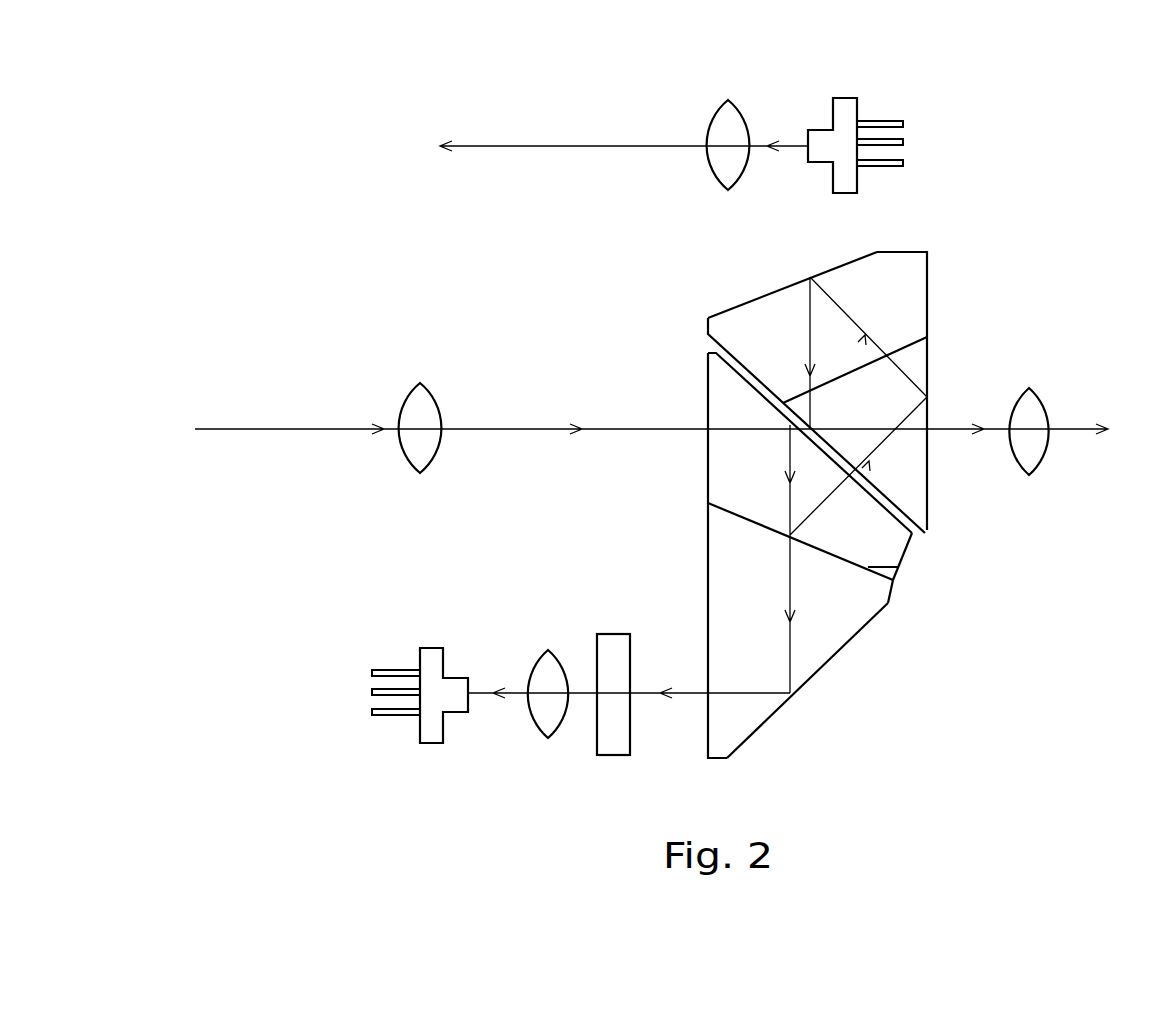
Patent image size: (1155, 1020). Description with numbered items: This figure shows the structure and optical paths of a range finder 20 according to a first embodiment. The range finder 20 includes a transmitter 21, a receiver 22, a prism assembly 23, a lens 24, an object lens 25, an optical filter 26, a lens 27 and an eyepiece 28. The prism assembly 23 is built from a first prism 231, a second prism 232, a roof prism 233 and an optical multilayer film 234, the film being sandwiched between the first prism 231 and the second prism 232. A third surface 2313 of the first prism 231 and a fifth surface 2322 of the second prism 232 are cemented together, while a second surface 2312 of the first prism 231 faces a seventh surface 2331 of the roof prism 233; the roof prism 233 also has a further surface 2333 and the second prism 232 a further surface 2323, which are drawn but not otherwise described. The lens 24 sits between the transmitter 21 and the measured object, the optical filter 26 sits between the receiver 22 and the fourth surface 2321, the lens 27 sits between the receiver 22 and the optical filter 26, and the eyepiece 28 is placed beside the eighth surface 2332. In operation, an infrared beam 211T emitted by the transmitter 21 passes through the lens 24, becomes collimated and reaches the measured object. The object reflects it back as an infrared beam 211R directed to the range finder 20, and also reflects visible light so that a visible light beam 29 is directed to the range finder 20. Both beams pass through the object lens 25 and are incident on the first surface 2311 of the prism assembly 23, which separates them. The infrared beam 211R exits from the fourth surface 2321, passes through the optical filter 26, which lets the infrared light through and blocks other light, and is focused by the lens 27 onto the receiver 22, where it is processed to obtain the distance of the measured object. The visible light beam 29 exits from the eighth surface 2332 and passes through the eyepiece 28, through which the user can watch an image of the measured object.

The range finder 20 is at (268, 174).
The transmitter 21 is at (847, 112).
The infrared beam 211T is at (800, 144).
The lens 24 is at (722, 123).
The object lens 25 is at (407, 400).
The visible light beam 29 is at (947, 429).
The eyepiece 28 is at (1032, 410).
The prism assembly 23 is at (1068, 522).
The roof prism 233 is at (857, 370).
The seventh surface 2331 is at (743, 364).
The eighth surface 2332 is at (929, 297).
The third surface of upper prism 2333 is at (847, 264).
The first prism 231 is at (781, 439).
The first surface 2311 is at (706, 400).
The second surface 2312 is at (745, 382).
The third surface 2313 is at (712, 510).
The optical multilayer film 234 is at (870, 567).
The second prism 232 is at (878, 595).
The fourth surface 2321 is at (710, 723).
The fifth surface 2322 is at (846, 568).
The third surface of lower prism 2323 is at (817, 670).
The infrared beam 211R is at (478, 692).
The optical filter 26 is at (615, 633).
The lens 27 is at (545, 650).
The receiver 22 is at (423, 657).